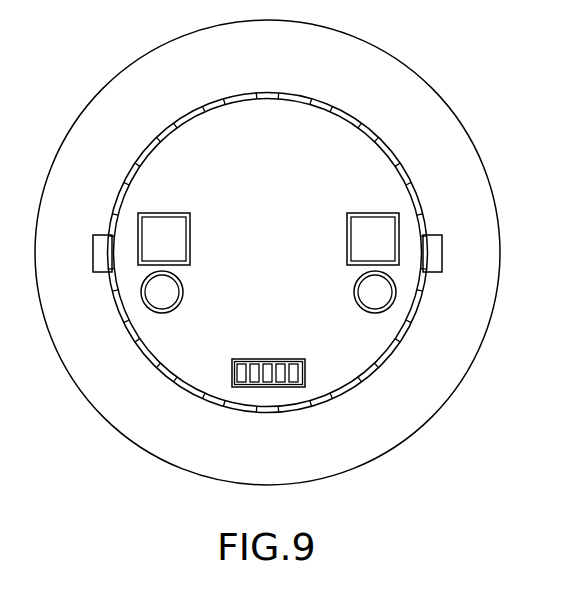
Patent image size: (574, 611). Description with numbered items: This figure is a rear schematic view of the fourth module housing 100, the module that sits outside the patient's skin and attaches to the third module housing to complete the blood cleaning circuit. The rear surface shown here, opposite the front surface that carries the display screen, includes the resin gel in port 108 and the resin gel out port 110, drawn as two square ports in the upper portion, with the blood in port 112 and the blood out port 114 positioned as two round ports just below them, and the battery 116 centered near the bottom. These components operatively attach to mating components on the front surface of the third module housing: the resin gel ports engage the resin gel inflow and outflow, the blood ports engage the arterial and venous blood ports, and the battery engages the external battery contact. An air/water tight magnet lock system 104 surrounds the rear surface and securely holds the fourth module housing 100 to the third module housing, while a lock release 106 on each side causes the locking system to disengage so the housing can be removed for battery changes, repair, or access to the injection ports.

The fourth module housing 100 is at (157, 60).
The air/water tight magnet lock system 104 is at (243, 95).
The lock release 106 is at (101, 238).
The resin gel in port 108 is at (180, 212).
The resin gel out port 110 is at (355, 212).
The blood in port 112 is at (183, 293).
The blood out port 114 is at (354, 293).
The battery 116 is at (250, 360).